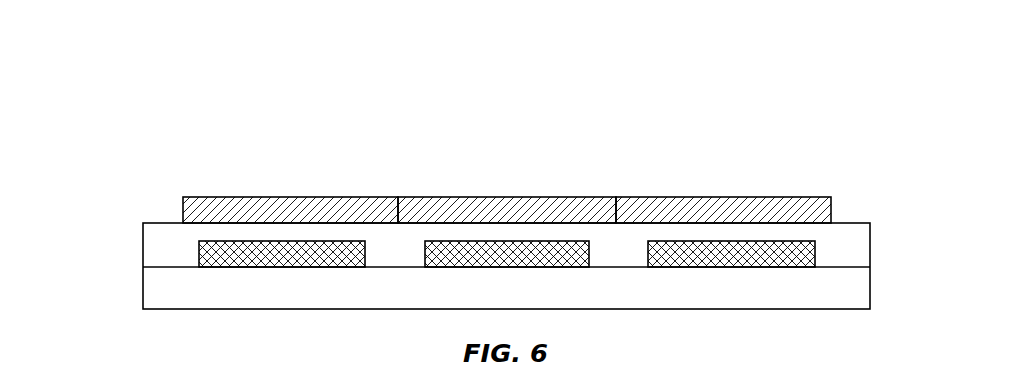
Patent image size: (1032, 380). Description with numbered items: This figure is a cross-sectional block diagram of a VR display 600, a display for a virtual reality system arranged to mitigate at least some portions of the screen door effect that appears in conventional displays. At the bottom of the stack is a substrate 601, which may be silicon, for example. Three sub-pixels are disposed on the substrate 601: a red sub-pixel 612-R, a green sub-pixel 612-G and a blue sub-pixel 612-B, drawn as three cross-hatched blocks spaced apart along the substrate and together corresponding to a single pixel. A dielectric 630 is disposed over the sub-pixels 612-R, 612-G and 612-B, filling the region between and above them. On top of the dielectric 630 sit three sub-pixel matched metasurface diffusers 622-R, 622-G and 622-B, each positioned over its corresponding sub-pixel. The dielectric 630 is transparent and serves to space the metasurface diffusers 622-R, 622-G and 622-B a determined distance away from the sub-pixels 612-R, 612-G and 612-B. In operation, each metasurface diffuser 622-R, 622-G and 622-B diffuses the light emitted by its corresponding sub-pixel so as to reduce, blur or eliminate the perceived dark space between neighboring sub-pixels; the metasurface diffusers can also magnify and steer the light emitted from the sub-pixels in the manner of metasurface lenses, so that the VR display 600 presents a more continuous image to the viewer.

The VR display 600 is at (118, 63).
The substrate 601 is at (568, 299).
The red sub-pixel 612-R is at (198, 242).
The green sub-pixel 612-G is at (445, 243).
The blue sub-pixel 612-B is at (778, 242).
The metasurface diffuser 622-R is at (247, 197).
The metasurface diffuser 622-G is at (555, 172).
The metasurface diffuser 622-B is at (775, 142).
The dielectric 630 is at (407, 248).